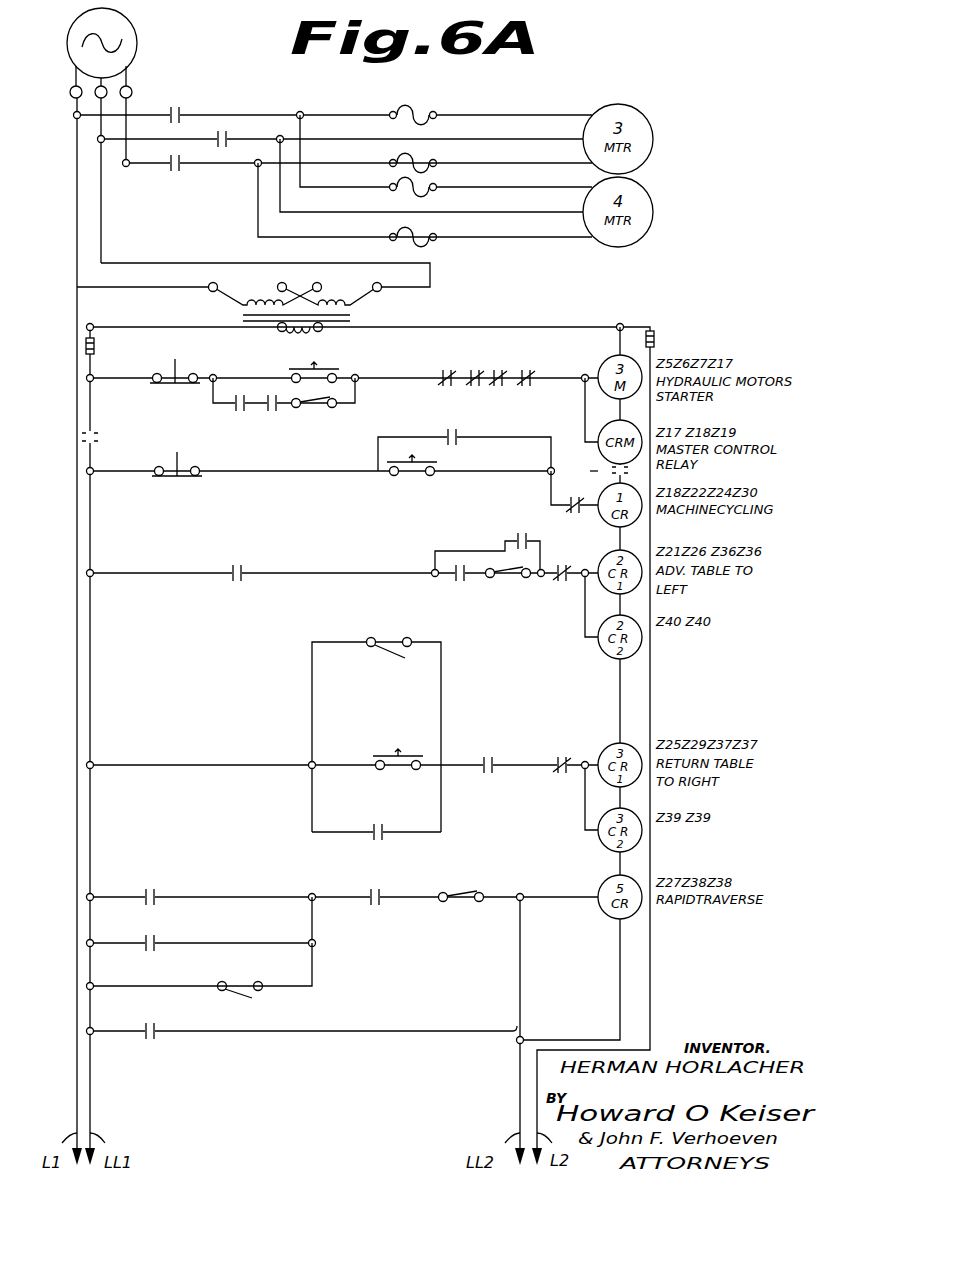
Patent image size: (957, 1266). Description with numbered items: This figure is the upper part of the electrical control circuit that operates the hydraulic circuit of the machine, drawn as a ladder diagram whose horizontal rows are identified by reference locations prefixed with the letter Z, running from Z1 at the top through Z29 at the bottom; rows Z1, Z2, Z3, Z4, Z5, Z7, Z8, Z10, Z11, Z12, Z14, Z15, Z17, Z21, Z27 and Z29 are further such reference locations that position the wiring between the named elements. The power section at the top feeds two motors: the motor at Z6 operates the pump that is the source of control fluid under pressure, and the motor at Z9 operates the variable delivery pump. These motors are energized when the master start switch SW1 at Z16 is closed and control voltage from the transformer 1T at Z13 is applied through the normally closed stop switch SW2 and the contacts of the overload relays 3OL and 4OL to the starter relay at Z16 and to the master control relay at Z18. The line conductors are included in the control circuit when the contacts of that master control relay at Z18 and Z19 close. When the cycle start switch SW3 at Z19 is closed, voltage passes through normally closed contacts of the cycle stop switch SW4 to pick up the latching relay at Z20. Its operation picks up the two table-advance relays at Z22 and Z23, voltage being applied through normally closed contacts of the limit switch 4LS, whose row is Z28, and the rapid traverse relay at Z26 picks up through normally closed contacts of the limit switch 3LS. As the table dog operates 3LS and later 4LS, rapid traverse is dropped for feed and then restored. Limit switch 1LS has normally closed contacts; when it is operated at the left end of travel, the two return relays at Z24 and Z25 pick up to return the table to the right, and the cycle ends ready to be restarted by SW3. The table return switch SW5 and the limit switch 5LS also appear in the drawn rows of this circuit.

The power supply line Z1 is at (48, 47).
The alternating current source Z2 is at (79, 47).
The power supply line Z3 is at (73, 73).
The supply terminals Z4 is at (76, 93).
The motor feed line with 3M contact Z5 is at (306, 240).
The horizontal reference location Z6 is at (302, 133).
The motor feed line with 3M contact Z7 is at (306, 157).
The motor 4 feed line Z8 is at (306, 251).
The horizontal reference location Z9 is at (302, 180).
The motor 4 feed line Z10 is at (306, 205).
The transformer primary line Z11 is at (225, 270).
The transformer primary line Z12 is at (117, 287).
The horizontal reference location Z13 is at (201, 300).
The control bus line Z14 is at (322, 327).
The control fuses Z15 is at (57, 350).
The horizontal reference location Z16 is at (384, 251).
The 3M CRM 5LS holding branch Z17 is at (188, 401).
The horizontal reference location Z18 is at (309, 424).
The horizontal reference location Z19 is at (288, 461).
The horizontal reference location Z20 is at (309, 488).
The 2CR1 branch Z21 is at (280, 546).
The horizontal reference location Z22 is at (309, 772).
The horizontal reference location Z23 is at (231, 724).
The horizontal reference location Z24 is at (309, 784).
The horizontal reference location Z25 is at (231, 826).
The horizontal reference location Z26 is at (309, 1010).
The 5CR holding line Z27 is at (168, 925).
The horizontal reference location Z28 is at (166, 969).
The 3CR1 line Z29 is at (269, 1023).
The transformer 1T is at (295, 300).
The overload relay 3OL is at (437, 246).
The overload relay 4OL is at (463, 282).
The master start switch SW1 is at (314, 362).
The stop switch SW2 is at (175, 366).
The cycle start switch SW3 is at (412, 459).
The cycle stop switch SW4 is at (177, 459).
The table return switch SW5 is at (398, 759).
The limit switch 1LS is at (389, 637).
The limit switch 3LS is at (461, 886).
The limit switch 4LS is at (374, 782).
The limit switch 5LS is at (314, 411).